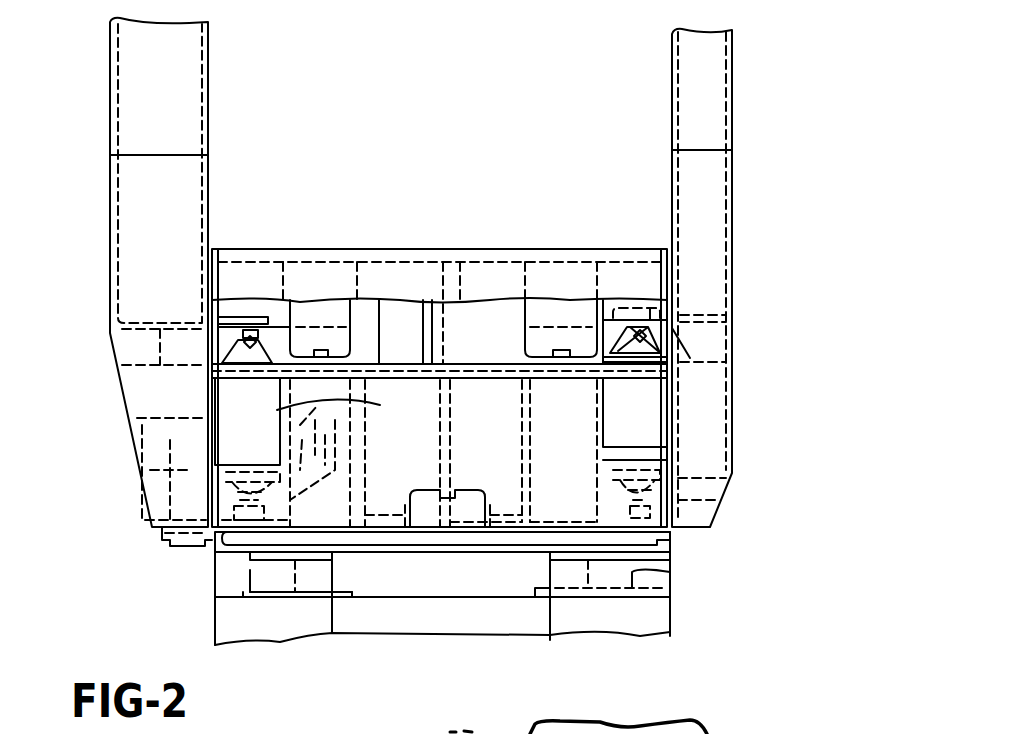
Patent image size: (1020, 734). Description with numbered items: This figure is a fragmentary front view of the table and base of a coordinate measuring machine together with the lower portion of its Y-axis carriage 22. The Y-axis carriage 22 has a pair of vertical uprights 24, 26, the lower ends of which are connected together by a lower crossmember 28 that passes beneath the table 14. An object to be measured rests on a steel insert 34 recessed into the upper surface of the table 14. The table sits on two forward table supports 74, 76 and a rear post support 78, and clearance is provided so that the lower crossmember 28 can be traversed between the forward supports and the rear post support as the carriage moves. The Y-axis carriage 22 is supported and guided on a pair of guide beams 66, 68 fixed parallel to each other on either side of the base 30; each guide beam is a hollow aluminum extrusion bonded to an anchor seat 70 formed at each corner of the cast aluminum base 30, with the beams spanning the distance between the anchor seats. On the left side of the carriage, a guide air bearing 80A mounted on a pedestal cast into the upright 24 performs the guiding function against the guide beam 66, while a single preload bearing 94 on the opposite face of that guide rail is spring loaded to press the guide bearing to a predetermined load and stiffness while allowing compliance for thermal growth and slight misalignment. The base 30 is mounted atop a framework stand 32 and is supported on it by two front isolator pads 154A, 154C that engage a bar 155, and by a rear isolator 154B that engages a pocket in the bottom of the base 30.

The table 14 is at (297, 248).
The Y-axis carriage 22 is at (106, 432).
The vertical upright 24 is at (110, 234).
The vertical upright 26 is at (735, 218).
The lower crossmember 28 is at (380, 340).
The base 30 is at (385, 535).
The framework stand 32 is at (207, 610).
The steel insert 34 is at (490, 247).
The guide beam 66 is at (268, 451).
The guide beam 68 is at (580, 417).
The anchor seat 70 is at (213, 463).
The forward table support 74 is at (360, 343).
The forward table support 76 is at (523, 343).
The rear post support 78 is at (432, 300).
The guide air bearing 80A is at (203, 420).
The preload bearing 94 is at (380, 407).
The front isolator pad 154A is at (250, 571).
The rear isolator 154B is at (463, 534).
The front isolator pad 154C is at (678, 580).
The bar 155 is at (430, 553).